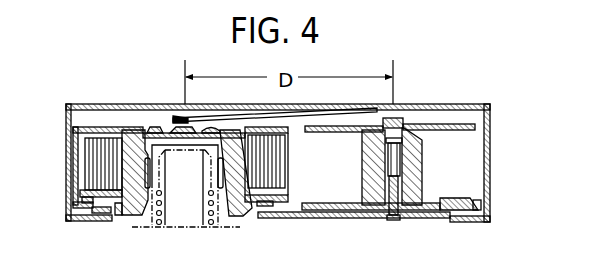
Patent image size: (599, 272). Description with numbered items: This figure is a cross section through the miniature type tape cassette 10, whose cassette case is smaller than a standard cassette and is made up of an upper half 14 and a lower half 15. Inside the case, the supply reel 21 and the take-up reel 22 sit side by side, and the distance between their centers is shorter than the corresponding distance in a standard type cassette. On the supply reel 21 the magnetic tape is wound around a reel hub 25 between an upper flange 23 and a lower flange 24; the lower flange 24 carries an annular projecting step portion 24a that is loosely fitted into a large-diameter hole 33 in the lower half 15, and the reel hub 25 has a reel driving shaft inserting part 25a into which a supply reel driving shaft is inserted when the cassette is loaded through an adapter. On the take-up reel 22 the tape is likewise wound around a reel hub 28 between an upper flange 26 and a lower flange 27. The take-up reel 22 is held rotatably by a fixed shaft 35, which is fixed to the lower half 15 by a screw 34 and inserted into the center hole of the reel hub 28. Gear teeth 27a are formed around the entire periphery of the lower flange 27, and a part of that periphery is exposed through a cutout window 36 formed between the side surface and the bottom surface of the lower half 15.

The miniature type tape cassette 10 is at (93, 89).
The upper half 14 is at (490, 135).
The lower half 15 is at (67, 199).
The supply reel 21 is at (115, 125).
The take-up reel 22 is at (438, 116).
The upper flange 23 is at (80, 126).
The lower flange 24 is at (85, 196).
The annular projecting step portion 24a is at (117, 215).
The reel hub 25 is at (248, 158).
The reel driving shaft inserting part 25a is at (228, 198).
The upper flange 26 is at (467, 122).
The lower flange 27 is at (469, 196).
The gear teeth 27a is at (483, 202).
The reel hub 28 is at (362, 157).
The hole 33 is at (257, 216).
The screw 34 is at (394, 219).
The fixed shaft 35 is at (402, 158).
The cutout window 36 is at (487, 217).